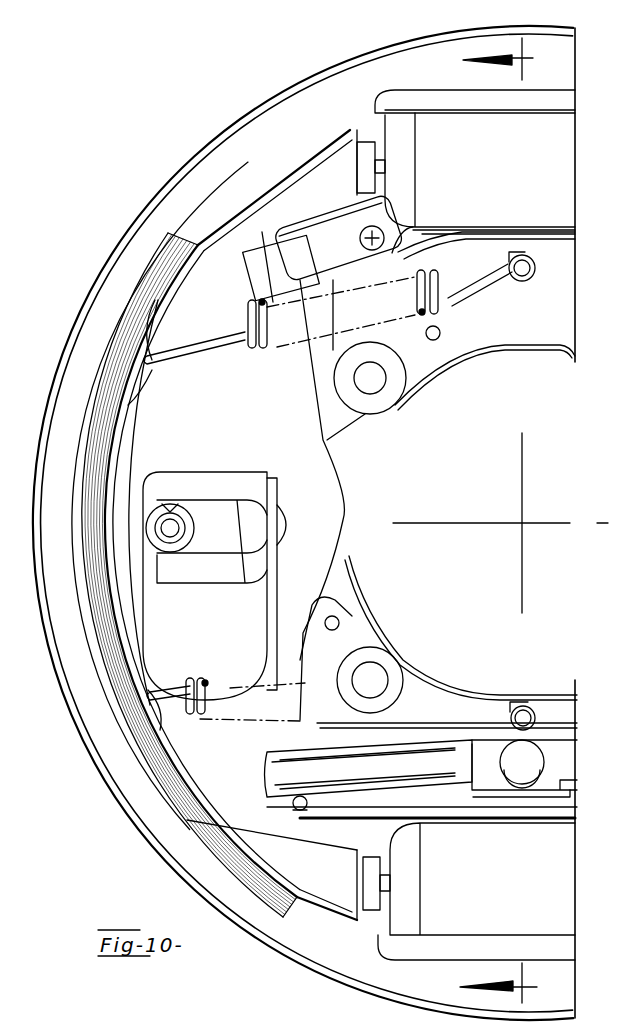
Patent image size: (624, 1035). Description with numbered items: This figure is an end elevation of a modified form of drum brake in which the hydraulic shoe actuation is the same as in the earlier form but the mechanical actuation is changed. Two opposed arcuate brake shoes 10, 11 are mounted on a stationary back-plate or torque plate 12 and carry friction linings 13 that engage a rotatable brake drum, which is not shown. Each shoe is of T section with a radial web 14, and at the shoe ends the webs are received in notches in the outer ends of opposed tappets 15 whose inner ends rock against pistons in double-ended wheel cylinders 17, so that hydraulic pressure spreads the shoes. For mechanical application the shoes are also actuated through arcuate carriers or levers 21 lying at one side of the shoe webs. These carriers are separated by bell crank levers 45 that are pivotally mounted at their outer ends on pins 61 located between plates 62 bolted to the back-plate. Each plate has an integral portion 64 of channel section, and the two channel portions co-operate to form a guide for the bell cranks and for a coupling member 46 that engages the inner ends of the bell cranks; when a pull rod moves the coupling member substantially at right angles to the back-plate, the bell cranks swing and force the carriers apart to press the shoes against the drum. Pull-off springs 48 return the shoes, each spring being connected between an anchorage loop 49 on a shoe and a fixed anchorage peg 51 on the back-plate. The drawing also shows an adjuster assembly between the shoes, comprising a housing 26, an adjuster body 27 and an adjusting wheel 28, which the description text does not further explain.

The arcuate brake shoe 10 is at (290, 895).
The arcuate brake shoe 11 is at (511, 520).
The back-plate 12 is at (243, 155).
The friction lining 13 is at (185, 810).
The radial web 14 is at (222, 828).
The tappet 15 is at (388, 168).
The wheel cylinder 17 is at (540, 172).
The arcuate carrier or lever 21 is at (200, 525).
The adjuster housing 26 is at (214, 571).
The adjuster body 27 is at (218, 552).
The adjusting wheel 28 is at (170, 528).
The bell crank lever 45 is at (372, 772).
The coupling member 46 is at (490, 755).
The pull-off spring 48 is at (250, 352).
The anchorage loop 49 is at (160, 372).
The anchorage peg 51 is at (520, 272).
The pin 61 is at (300, 812).
The plate 62 is at (412, 776).
The channel section portion 64 is at (517, 800).